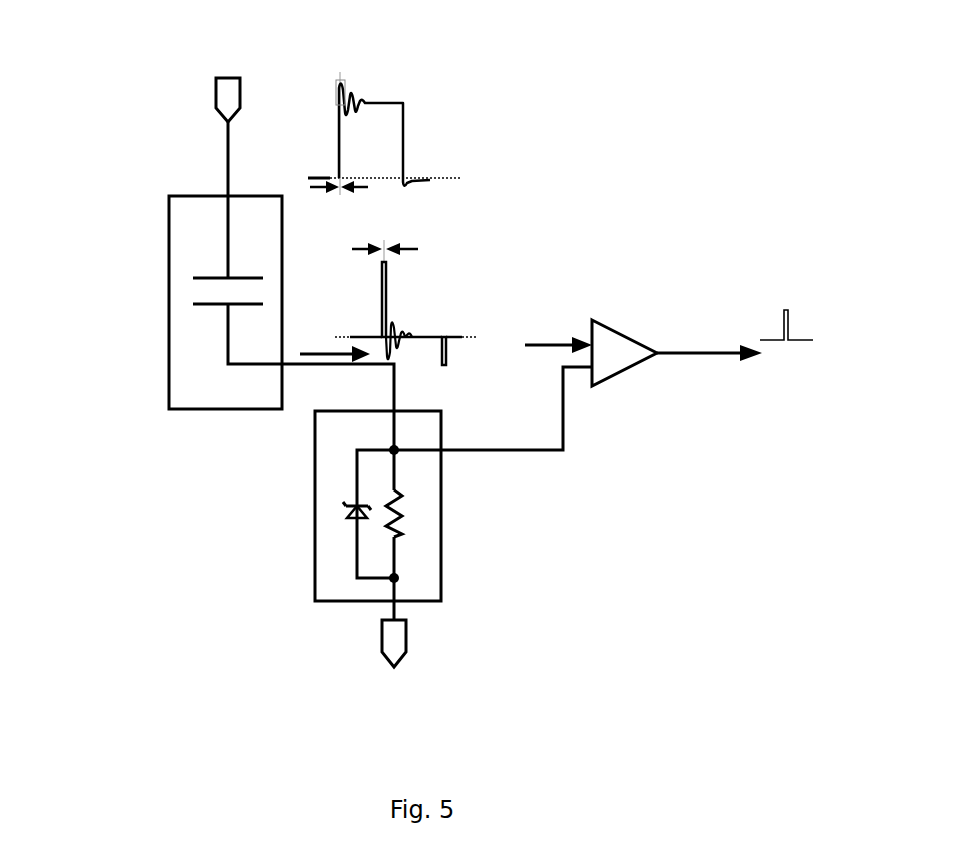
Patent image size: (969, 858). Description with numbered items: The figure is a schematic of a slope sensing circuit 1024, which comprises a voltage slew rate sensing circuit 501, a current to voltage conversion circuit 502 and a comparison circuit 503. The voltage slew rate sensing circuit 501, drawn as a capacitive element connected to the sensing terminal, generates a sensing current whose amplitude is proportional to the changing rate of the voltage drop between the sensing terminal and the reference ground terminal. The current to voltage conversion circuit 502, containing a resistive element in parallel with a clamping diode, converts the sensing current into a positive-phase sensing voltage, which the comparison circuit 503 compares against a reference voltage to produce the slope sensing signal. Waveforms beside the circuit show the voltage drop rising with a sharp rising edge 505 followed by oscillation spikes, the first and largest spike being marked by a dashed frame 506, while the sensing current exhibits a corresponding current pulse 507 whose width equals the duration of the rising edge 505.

The slope sensing circuit 1024 is at (125, 77).
The voltage slew rate sensing circuit 501 is at (190, 408).
The current to voltage conversion circuit 502 is at (313, 514).
The comparison circuit 503 is at (618, 320).
The sharp/abrupt rising edge 505 is at (338, 125).
The dashed frame 506 is at (345, 92).
The current pulse 507 is at (382, 300).